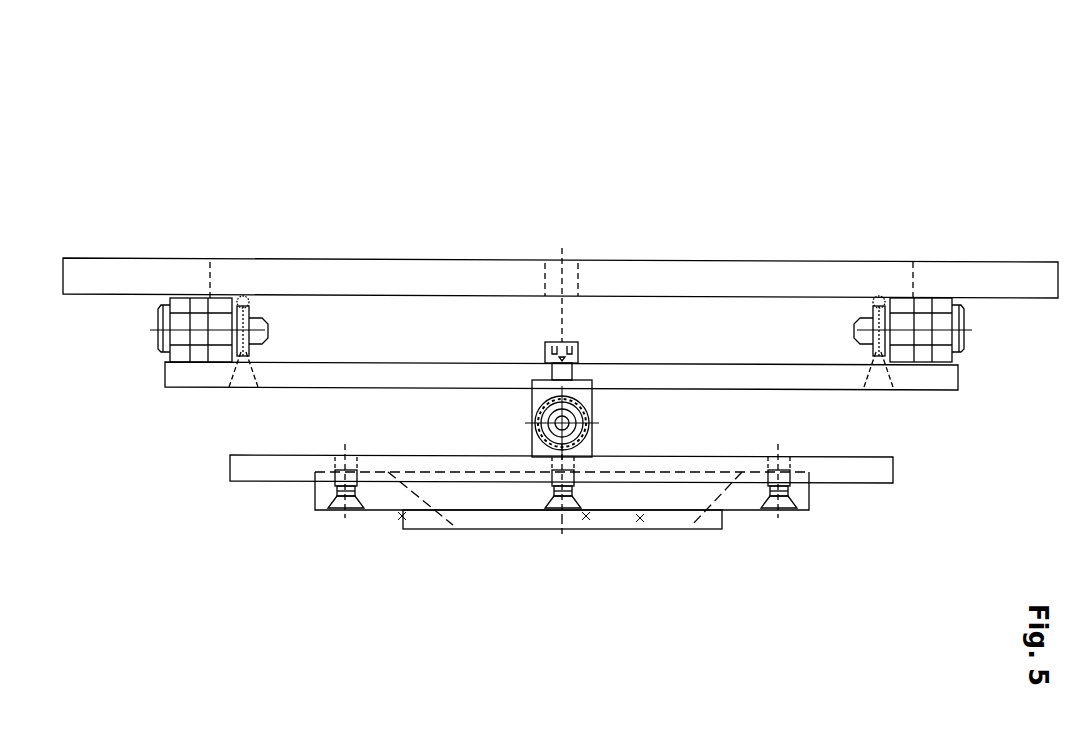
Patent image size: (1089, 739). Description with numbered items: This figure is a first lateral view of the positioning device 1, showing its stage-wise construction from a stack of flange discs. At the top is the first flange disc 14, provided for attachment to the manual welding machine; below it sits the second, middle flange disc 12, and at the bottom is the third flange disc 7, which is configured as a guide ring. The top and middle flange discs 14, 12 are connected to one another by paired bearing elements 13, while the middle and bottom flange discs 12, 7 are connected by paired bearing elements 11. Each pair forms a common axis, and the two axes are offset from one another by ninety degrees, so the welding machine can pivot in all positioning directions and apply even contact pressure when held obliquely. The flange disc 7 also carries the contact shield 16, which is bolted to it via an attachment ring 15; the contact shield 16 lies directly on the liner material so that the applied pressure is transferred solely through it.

The device 1 is at (767, 98).
The third flange disc 7 is at (265, 468).
The bearing elements 11 is at (556, 443).
The second flange disc 12 is at (355, 376).
The bearing elements 13 is at (202, 335).
The first flange disc 14 is at (131, 277).
The attachment ring 15 is at (743, 497).
The contact shield 16 is at (528, 515).